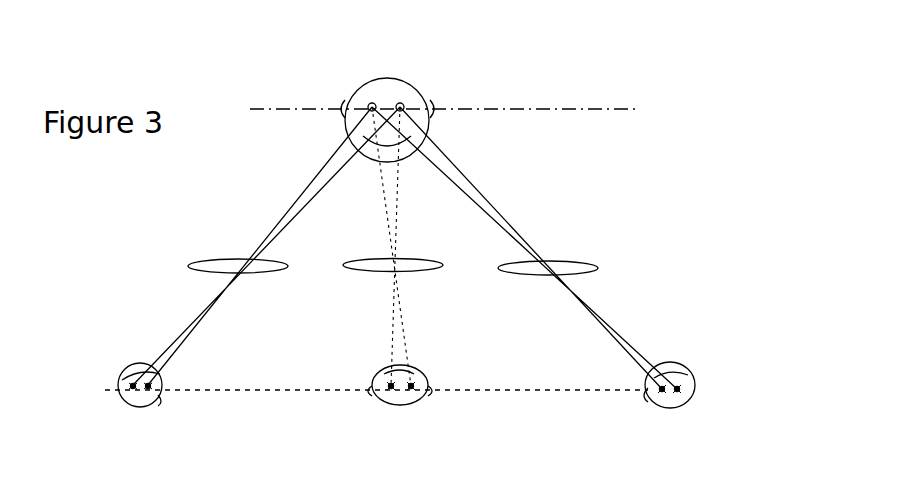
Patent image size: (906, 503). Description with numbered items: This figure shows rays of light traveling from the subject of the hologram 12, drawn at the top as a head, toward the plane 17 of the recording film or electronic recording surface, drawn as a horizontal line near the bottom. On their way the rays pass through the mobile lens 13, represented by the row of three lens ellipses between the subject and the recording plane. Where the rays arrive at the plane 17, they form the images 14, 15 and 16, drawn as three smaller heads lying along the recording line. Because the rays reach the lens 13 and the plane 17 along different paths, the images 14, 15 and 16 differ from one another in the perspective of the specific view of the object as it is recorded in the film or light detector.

The subject of the hologram 12 is at (390, 80).
The mobile lens 13 is at (588, 260).
The image 14 is at (700, 372).
The image 15 is at (430, 405).
The image 16 is at (160, 408).
The plane of the recording film or electronic recording surface 17 is at (590, 397).